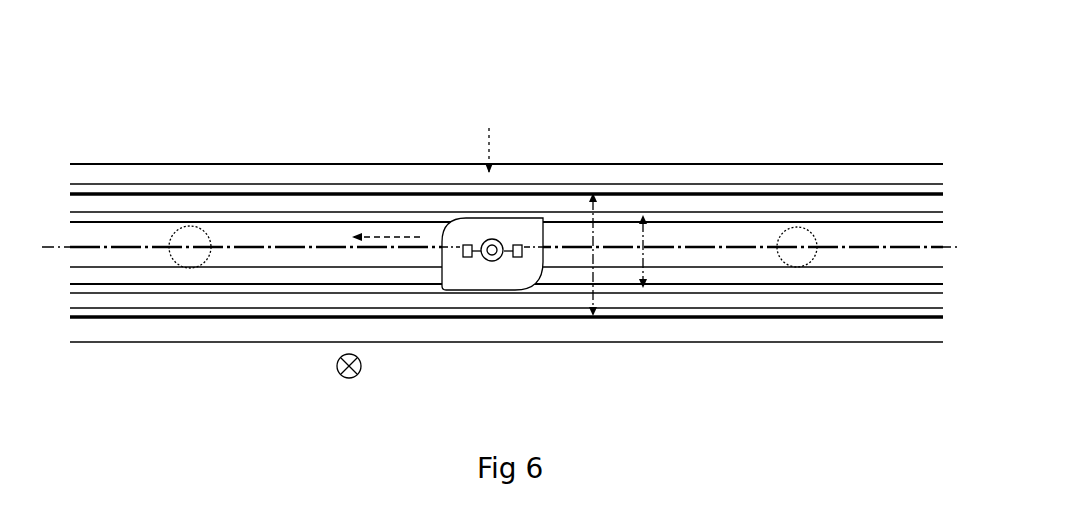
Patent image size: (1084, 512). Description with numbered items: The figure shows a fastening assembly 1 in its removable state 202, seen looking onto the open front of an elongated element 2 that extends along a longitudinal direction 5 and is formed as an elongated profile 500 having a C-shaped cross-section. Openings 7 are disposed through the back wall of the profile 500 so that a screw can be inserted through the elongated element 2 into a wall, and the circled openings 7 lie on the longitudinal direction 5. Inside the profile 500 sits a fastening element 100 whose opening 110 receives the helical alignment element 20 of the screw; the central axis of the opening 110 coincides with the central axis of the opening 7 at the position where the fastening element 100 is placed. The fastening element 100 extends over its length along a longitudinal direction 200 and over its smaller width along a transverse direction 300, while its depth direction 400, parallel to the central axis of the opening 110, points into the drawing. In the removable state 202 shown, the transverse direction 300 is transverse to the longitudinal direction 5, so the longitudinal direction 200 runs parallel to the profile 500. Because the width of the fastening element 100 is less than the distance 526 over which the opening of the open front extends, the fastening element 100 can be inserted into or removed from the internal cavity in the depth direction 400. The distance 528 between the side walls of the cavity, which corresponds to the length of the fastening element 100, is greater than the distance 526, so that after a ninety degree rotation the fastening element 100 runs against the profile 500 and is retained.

The fastening assembly 1 is at (480, 80).
The elongated element 2 is at (312, 138).
The longitudinal direction 5 is at (933, 247).
The openings 7 is at (195, 235).
The helical alignment element 20 is at (484, 262).
The fastening element 100 is at (509, 286).
The opening 110 is at (492, 230).
The longitudinal direction 200 is at (416, 237).
The removable state 202 is at (598, 68).
The transverse direction 300 is at (512, 150).
The depth direction 400 is at (350, 378).
The elongated profile 500 is at (638, 173).
The distance 526 is at (657, 275).
The distance 528 is at (592, 260).